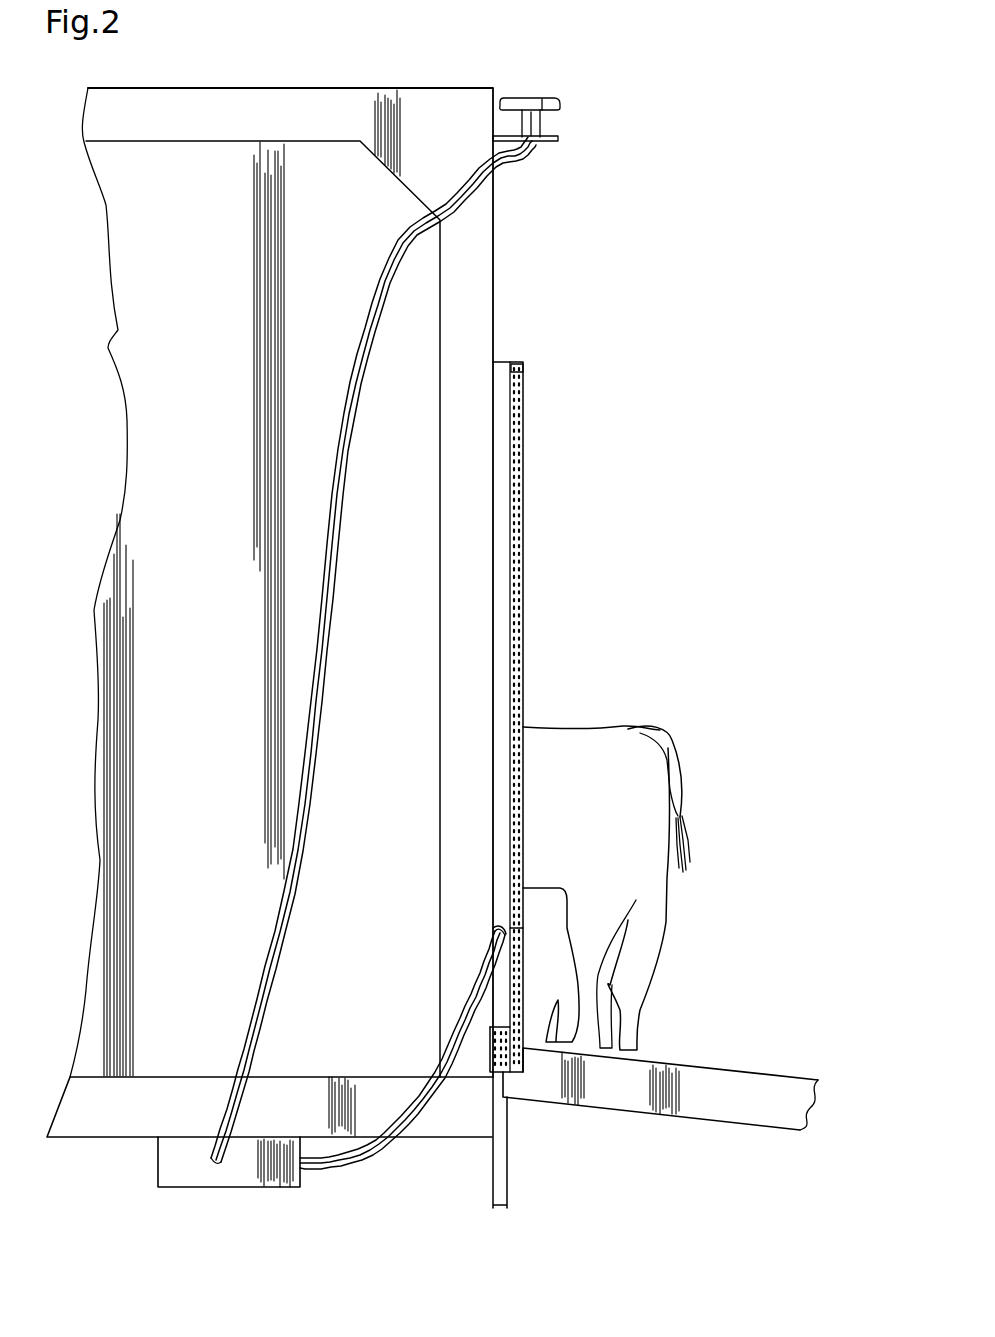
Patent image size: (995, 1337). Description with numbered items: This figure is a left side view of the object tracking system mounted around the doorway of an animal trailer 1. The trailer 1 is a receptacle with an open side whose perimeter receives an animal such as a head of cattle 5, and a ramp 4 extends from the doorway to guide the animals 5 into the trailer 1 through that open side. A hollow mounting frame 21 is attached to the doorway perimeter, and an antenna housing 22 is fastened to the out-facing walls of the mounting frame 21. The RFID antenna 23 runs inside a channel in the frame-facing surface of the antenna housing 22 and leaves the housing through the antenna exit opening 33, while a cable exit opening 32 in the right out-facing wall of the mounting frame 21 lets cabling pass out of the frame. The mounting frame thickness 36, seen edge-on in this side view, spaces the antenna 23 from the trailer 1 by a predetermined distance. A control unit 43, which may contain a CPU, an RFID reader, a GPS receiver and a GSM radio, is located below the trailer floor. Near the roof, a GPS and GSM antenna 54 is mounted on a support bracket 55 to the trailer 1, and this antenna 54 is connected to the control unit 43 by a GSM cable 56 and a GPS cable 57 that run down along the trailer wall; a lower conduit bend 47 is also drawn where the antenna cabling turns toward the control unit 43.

The animal trailer 1 is at (218, 152).
The ramp 4 is at (722, 1118).
The head of cattle 5 is at (588, 742).
The mounting frame 21 is at (500, 362).
The antenna housing 22 is at (524, 366).
The RFID antenna 23 is at (448, 1092).
The cable exit opening 32 is at (523, 926).
The antenna exit opening 33 is at (497, 930).
The mounting frame thickness 36 is at (497, 1209).
The control unit 43 is at (246, 1173).
The conduit bend 47 is at (409, 1138).
The antenna 54 is at (548, 97).
The support bracket 55 is at (559, 140).
The GSM cable 56 is at (238, 1088).
The GPS cable 57 is at (262, 1032).